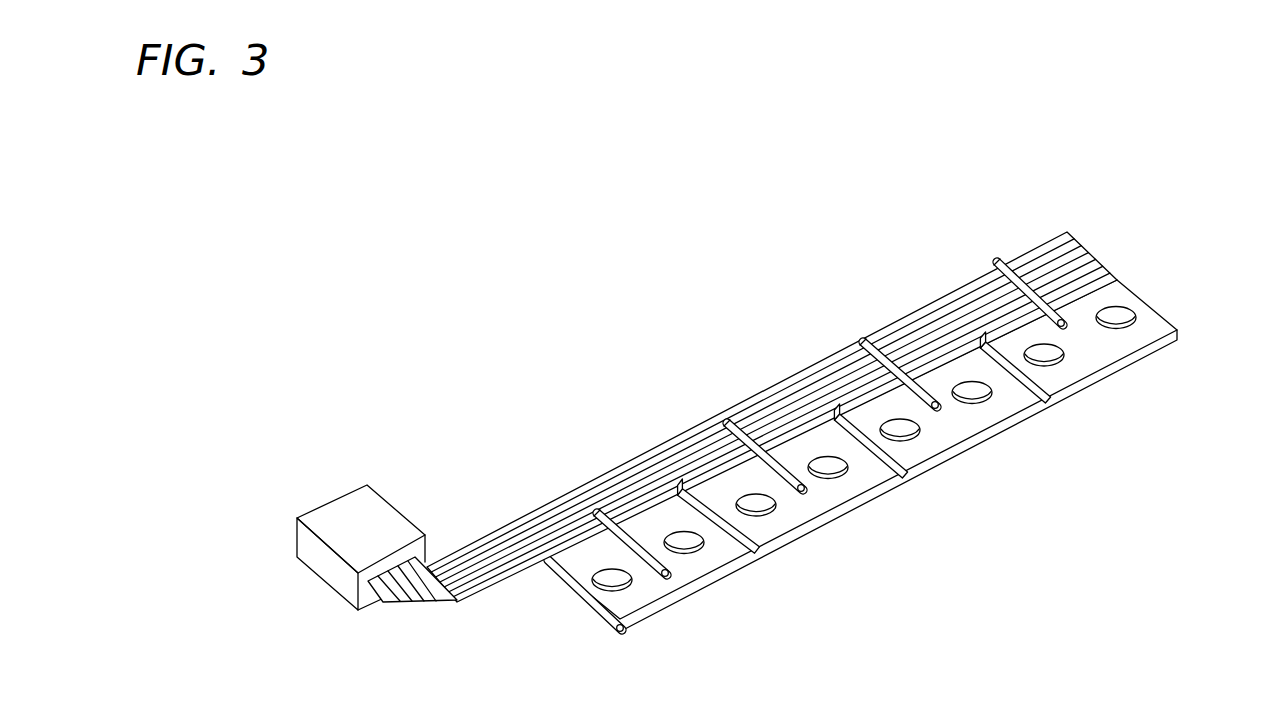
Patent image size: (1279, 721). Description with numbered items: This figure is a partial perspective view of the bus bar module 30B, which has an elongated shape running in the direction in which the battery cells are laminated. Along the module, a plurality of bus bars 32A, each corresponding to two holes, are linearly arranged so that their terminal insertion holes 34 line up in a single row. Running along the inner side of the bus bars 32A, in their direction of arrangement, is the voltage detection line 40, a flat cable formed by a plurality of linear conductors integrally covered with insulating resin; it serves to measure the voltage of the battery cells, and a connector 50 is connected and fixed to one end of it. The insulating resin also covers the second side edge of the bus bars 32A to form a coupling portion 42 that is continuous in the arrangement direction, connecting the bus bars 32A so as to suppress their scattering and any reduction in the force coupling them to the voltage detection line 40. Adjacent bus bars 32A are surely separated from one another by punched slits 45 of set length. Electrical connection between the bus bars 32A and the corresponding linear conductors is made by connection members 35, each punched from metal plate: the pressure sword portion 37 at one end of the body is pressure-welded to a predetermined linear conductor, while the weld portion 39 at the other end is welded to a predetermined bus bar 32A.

The bus bar module 30B is at (779, 322).
The bus bar 32A is at (1153, 328).
The terminal insertion hole 34 is at (600, 586).
The connection member 35 is at (625, 512).
The pressure sword portion 37 is at (596, 511).
The weld portion 39 is at (1064, 323).
The voltage detection line 40 is at (541, 499).
The coupling portion 42 is at (780, 540).
The slit 45 is at (700, 489).
The connector 50 is at (358, 515).